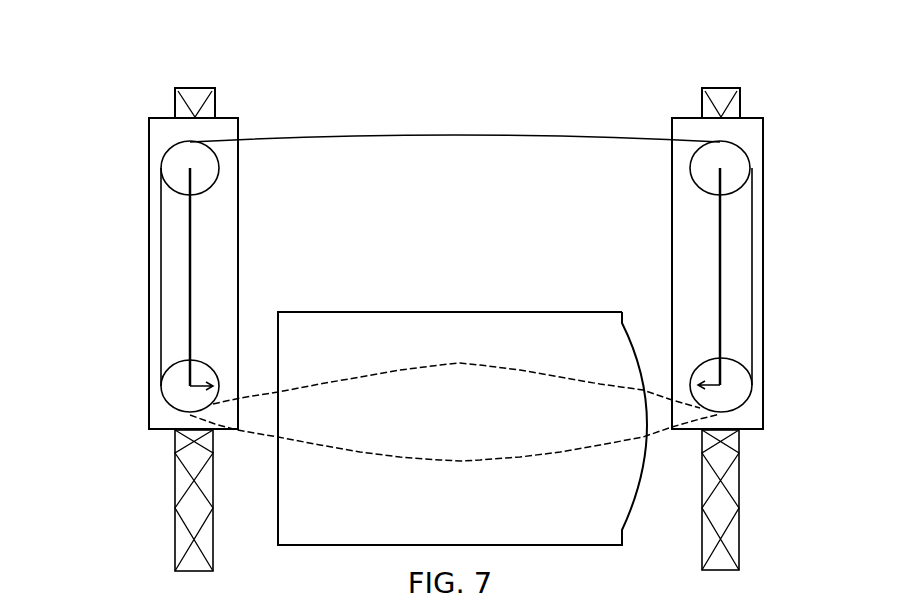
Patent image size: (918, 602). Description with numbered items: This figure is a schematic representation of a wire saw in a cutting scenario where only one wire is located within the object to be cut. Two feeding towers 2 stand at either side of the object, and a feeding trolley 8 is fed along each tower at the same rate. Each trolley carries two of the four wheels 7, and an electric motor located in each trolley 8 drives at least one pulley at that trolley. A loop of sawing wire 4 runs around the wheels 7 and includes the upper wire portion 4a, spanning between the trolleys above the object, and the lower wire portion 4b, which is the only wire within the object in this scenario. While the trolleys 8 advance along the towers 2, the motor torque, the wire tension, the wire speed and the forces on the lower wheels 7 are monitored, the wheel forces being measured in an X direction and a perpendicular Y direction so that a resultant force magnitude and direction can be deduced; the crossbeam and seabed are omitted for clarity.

The feeding tower 2 is at (180, 88).
The loop of sawing wire 4 is at (157, 280).
The upper wire portion 4a is at (500, 135).
The lower wire portion 4b is at (317, 385).
The wheel 7 is at (177, 173).
The feeding trolley 8 is at (168, 132).